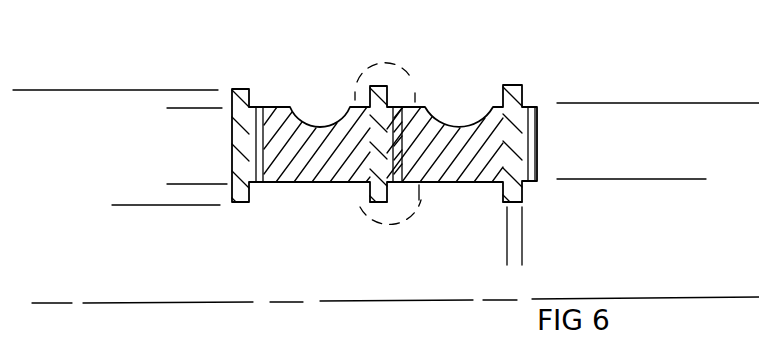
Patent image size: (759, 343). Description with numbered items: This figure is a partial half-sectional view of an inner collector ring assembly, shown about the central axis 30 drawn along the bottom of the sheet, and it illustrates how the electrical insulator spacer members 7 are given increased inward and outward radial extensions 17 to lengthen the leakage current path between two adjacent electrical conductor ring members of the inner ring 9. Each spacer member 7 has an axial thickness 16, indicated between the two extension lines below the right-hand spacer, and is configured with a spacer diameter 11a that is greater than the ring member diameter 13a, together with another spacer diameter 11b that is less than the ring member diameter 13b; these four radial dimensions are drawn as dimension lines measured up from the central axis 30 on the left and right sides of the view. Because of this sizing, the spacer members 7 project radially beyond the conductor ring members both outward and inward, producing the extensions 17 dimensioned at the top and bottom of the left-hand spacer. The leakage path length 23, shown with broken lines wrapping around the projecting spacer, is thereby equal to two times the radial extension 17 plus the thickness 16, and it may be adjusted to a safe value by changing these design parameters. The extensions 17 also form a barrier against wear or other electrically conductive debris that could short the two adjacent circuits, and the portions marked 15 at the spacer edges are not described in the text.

The insulator spacer member 7 is at (243, 140).
The inner ring 9 is at (452, 123).
The flange lip 15 is at (385, 193).
The axial thickness 16 is at (478, 245).
The radial extension 17 is at (193, 127).
The leakage path length 23 is at (388, 63).
The central axis 30 is at (412, 298).
The spacer diameter 11a is at (48, 325).
The spacer diameter 11b is at (133, 205).
The ring member diameter 13a is at (716, 103).
The ring member diameter 13b is at (660, 179).